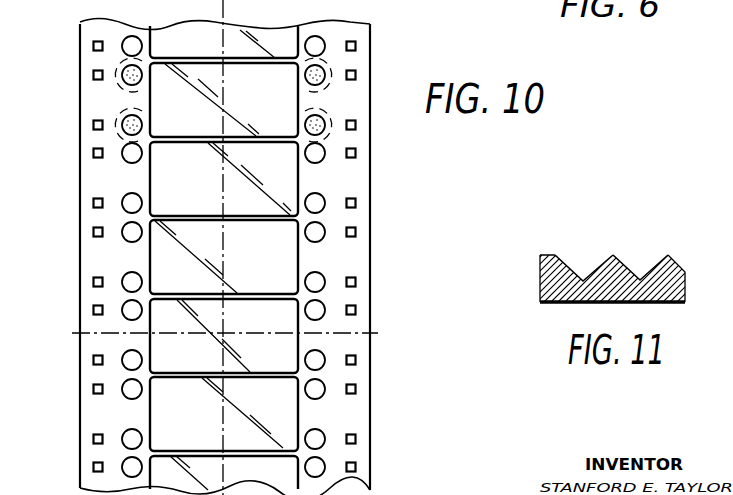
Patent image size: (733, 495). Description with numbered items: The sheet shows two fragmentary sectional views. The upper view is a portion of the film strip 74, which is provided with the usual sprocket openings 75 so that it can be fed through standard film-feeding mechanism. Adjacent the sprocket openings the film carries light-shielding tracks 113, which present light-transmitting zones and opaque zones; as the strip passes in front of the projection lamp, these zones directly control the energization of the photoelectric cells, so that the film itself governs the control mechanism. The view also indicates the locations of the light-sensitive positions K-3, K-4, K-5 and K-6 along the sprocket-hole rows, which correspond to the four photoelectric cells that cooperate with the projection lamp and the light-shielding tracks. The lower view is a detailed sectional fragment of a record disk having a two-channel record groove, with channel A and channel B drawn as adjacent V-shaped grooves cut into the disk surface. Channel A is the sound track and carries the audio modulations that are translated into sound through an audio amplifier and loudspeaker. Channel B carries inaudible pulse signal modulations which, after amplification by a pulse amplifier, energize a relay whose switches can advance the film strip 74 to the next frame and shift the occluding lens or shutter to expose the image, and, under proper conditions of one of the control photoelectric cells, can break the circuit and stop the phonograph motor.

In FIG. 10, the coded sprocket hole K-3 is at (123, 72).
In FIG. 10, the coded sprocket hole K-4 is at (123, 126).
In FIG. 10, the coded sprocket hole K-5 is at (324, 76).
In FIG. 10, the coded sprocket hole K-6 is at (323, 127).
In FIG. 10, the light-shielding tracks 113 is at (123, 283).
In FIG. 10, the film strip 74 is at (288, 415).
In FIG. 10, the sprocket openings 75 is at (358, 469).
In FIG. 11, the channel A is at (629, 257).
In FIG. 11, the channel B is at (650, 257).